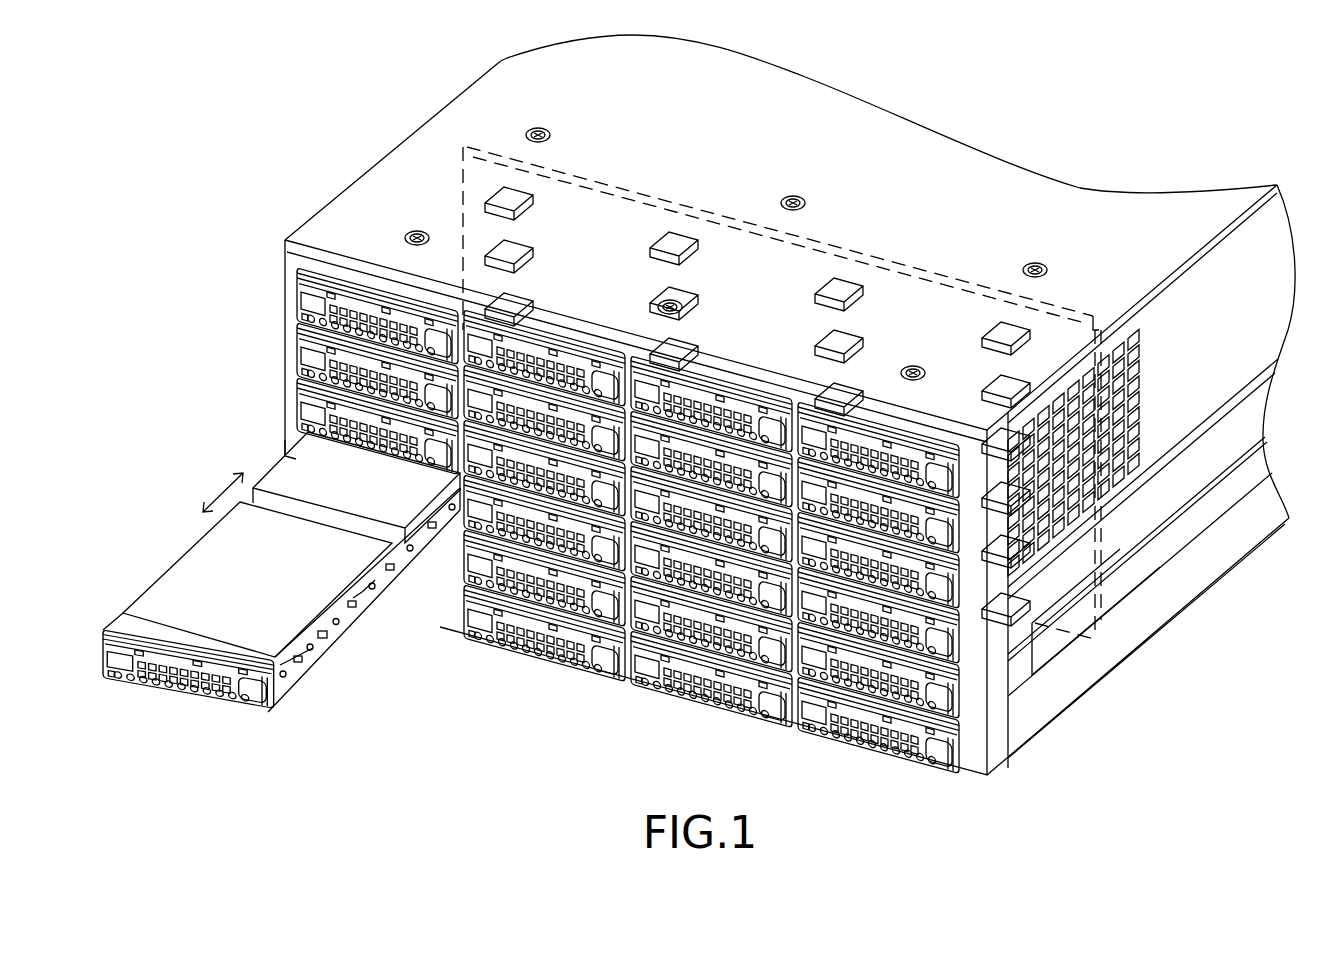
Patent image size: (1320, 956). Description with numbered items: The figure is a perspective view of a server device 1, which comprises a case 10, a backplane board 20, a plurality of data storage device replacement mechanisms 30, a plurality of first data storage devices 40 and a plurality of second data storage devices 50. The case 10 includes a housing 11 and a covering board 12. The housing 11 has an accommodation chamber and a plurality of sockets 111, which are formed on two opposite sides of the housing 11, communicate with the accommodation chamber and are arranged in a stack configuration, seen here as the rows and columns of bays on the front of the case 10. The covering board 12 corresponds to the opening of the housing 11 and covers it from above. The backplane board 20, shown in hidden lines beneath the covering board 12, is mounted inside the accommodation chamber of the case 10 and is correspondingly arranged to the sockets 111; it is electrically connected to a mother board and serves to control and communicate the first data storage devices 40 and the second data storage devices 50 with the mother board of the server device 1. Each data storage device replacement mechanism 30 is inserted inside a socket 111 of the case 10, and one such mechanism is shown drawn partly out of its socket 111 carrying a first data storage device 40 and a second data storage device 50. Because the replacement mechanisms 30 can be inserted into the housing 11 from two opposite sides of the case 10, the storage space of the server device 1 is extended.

The server device 1 is at (295, 88).
The case 10 is at (290, 195).
The housing 11 is at (285, 290).
The socket 111 is at (290, 440).
The covering board 12 is at (400, 182).
The backplane board 20 is at (603, 207).
The data storage device replacement mechanism 30 is at (350, 647).
The first data storage device 40 is at (192, 562).
The second data storage device 50 is at (282, 472).